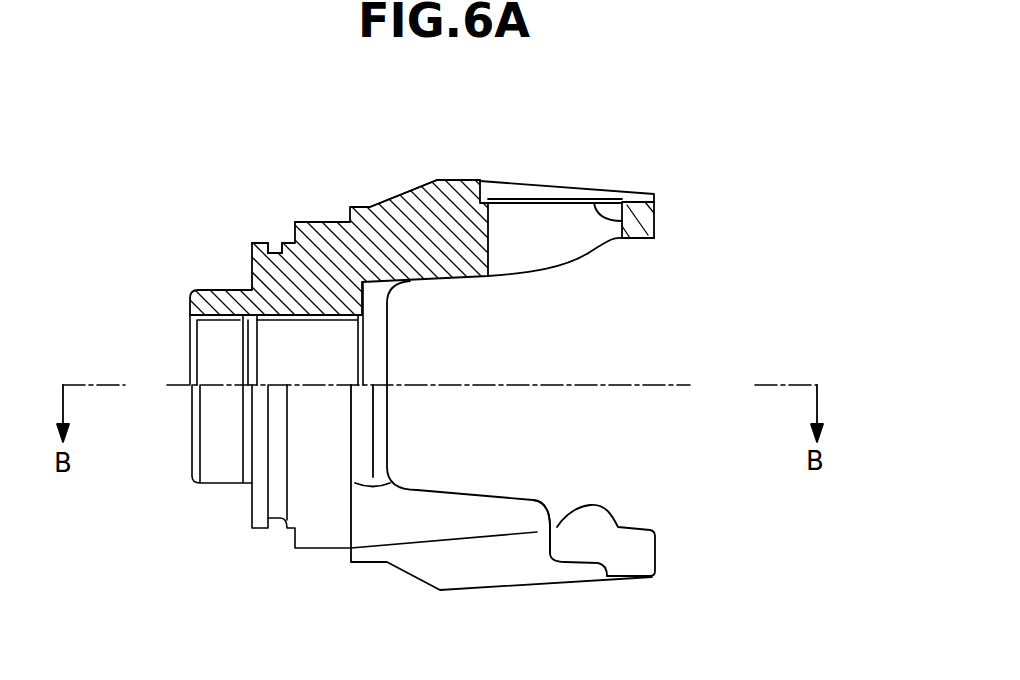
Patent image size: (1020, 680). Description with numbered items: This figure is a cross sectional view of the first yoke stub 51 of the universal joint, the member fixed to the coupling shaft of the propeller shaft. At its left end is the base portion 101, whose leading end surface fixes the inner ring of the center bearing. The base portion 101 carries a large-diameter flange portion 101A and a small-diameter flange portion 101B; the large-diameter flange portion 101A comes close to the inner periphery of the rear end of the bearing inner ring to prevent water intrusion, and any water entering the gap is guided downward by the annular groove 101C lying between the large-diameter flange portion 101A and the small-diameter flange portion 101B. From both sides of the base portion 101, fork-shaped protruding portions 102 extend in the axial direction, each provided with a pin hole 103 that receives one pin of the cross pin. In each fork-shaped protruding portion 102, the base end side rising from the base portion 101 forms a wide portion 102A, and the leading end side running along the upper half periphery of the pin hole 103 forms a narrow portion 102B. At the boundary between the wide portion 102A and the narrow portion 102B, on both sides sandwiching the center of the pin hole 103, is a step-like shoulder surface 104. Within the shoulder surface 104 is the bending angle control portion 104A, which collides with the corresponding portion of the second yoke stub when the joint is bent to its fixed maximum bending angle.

The first yoke stub 51 is at (397, 196).
The base portion 101 is at (367, 223).
The large-diameter flange portion 101A is at (288, 242).
The small-diameter flange portion 101B is at (258, 243).
The annular groove 101C is at (274, 250).
The fork-shaped protruding portion 102 is at (657, 213).
The wide portion 102A is at (457, 184).
The narrow portion 102B is at (657, 232).
The pin hole 103 is at (595, 205).
The shoulder surface 104 is at (556, 521).
The bending angle control portion 104A is at (562, 525).